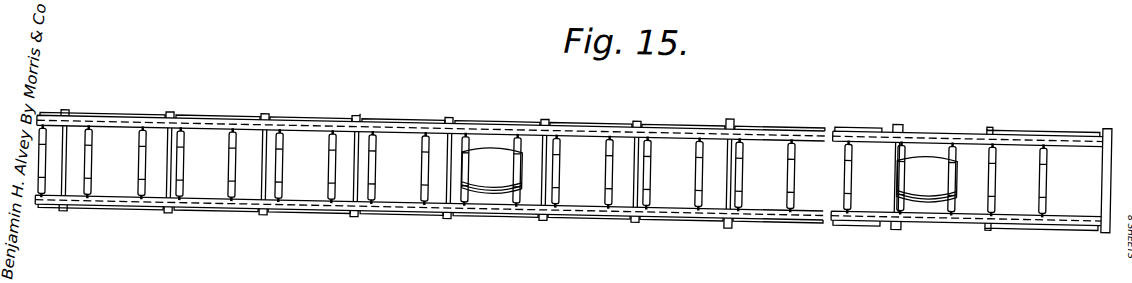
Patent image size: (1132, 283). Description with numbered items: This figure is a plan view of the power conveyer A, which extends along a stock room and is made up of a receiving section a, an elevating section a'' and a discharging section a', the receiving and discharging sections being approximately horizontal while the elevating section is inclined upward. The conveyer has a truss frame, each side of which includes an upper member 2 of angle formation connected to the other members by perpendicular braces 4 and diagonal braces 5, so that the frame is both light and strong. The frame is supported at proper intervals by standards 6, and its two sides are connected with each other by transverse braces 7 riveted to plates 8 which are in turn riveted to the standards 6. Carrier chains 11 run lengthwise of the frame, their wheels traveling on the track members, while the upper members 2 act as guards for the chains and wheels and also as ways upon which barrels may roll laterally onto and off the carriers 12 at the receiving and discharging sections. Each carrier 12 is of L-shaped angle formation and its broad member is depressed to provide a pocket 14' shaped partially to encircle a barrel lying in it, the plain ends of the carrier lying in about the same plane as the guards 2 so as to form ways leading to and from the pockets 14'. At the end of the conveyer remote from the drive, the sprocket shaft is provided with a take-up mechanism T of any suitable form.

The upper member 2 is at (569, 157).
The perpendicular brace 4 is at (360, 169).
The diagonal brace 5 is at (435, 168).
The standard 6 is at (461, 155).
The transverse brace 7 is at (483, 169).
The plate 8 is at (707, 165).
The carrier chain 11 is at (217, 148).
The carrier 12 is at (488, 169).
The pocket 14' is at (485, 169).
The power conveyer A is at (765, 154).
The take-up mechanism T is at (1049, 162).
The receiving section a is at (907, 170).
The discharging section a' is at (101, 148).
The elevating section a'' is at (402, 155).